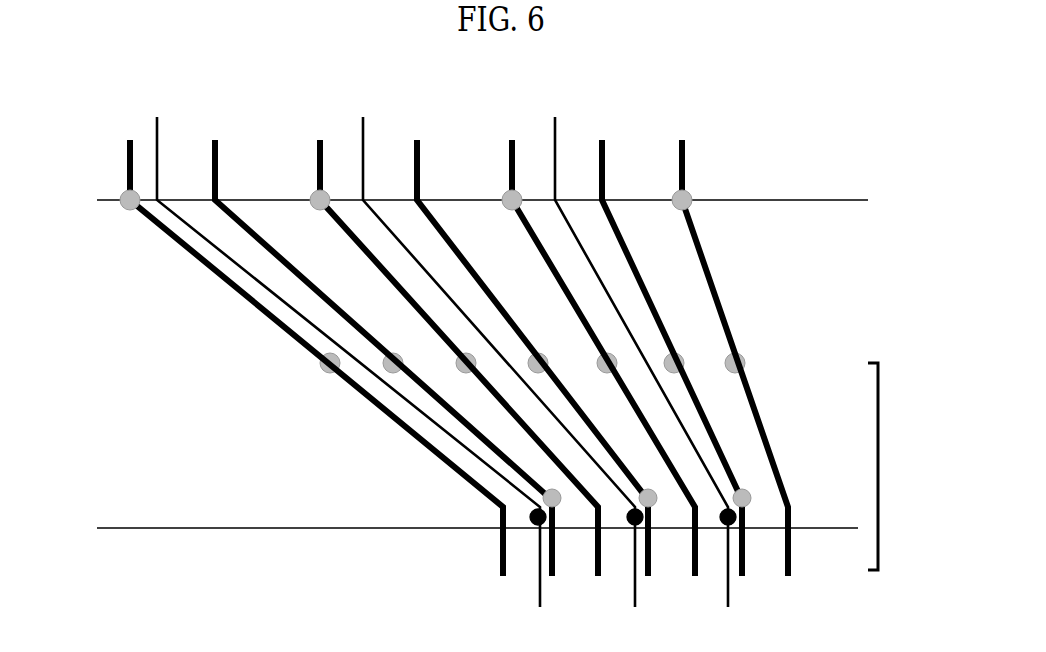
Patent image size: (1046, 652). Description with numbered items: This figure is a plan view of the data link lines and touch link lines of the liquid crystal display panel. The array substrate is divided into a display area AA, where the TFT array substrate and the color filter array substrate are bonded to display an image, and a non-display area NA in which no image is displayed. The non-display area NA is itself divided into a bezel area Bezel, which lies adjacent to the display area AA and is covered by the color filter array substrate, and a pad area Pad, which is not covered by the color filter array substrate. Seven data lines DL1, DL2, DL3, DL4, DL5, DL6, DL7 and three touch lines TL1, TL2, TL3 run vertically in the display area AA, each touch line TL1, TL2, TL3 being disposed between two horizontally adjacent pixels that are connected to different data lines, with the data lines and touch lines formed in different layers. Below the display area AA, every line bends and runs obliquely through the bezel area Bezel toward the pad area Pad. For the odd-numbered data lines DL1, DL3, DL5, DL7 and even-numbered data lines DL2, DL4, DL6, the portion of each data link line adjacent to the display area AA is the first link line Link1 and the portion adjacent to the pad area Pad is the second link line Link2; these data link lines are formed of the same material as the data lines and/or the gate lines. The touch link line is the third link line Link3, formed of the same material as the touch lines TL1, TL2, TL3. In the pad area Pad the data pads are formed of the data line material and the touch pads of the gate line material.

The odd-numbered data line DL1 is at (300, 347).
The even-numbered data line DL2 is at (378, 347).
The odd-numbered data line DL3 is at (446, 347).
The even-numbered data line DL4 is at (525, 347).
The odd-numbered data line DL5 is at (590, 347).
The even-numbered data line DL6 is at (666, 347).
The odd-numbered data line DL7 is at (723, 347).
The touch line TL1 is at (343, 347).
The touch line TL2 is at (491, 347).
The touch line TL3 is at (632, 347).
The first link line Link1 is at (703, 260).
The second link line Link2 is at (355, 393).
The third link line Link3 is at (238, 267).
The display area AA is at (482, 184).
The non-display area NA is at (896, 466).
The bezel area Bezel is at (587, 368).
The pad area Pad is at (477, 550).